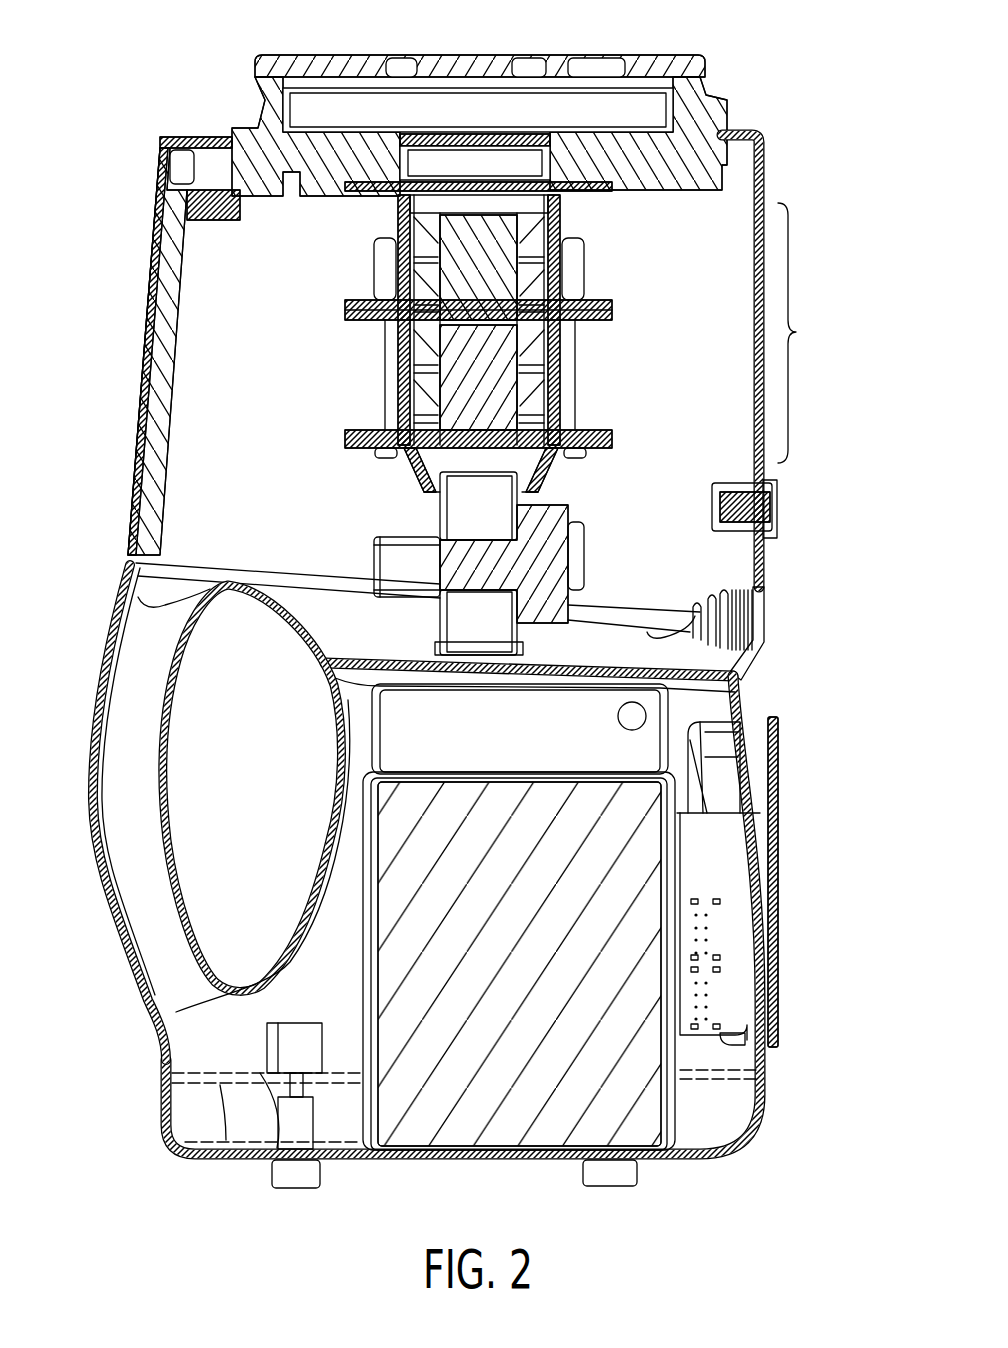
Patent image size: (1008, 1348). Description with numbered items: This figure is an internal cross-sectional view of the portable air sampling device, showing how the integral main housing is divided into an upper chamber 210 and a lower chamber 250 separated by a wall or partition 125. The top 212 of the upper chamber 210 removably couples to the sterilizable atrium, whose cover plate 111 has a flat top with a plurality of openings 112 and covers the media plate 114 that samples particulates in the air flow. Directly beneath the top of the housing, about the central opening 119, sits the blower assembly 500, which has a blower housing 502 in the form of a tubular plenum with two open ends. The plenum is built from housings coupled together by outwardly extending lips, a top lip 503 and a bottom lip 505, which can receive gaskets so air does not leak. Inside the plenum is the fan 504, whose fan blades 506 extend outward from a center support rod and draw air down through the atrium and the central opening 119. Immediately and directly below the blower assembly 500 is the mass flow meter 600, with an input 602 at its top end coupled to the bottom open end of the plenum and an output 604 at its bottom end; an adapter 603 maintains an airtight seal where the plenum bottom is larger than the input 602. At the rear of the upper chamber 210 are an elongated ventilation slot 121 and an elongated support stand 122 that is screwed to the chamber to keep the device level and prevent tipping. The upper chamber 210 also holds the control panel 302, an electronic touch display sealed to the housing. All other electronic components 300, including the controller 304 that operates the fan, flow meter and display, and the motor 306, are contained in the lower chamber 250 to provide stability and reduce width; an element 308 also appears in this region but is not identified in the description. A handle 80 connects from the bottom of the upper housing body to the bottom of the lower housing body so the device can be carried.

The handle 80 is at (96, 866).
The cover plate 111 is at (399, 66).
The openings 112 is at (587, 65).
The media plate 114 is at (488, 121).
The central opening 119 is at (488, 174).
The elongated ventilation slot 121 is at (767, 610).
The support stand 122 is at (772, 500).
The partition 125 is at (420, 662).
The upper chamber 210 is at (783, 654).
The top of the upper chamber 212 is at (190, 134).
The lower chamber 250 is at (795, 712).
The electronic components 300 is at (470, 961).
The control panel 302 is at (148, 340).
The controller 304 is at (737, 946).
The motor 306 is at (533, 1012).
The battery cover plate 308 is at (780, 815).
The blower assembly 500 is at (571, 329).
The blower housing 502 is at (418, 226).
The top lip 503 is at (600, 313).
The fan 504 is at (517, 390).
The bottom lip 505 is at (612, 446).
The fan blades 506 is at (527, 300).
The mass flow meter 600 is at (372, 546).
The input 602 is at (443, 512).
The adapter 603 is at (537, 472).
The output 604 is at (440, 628).